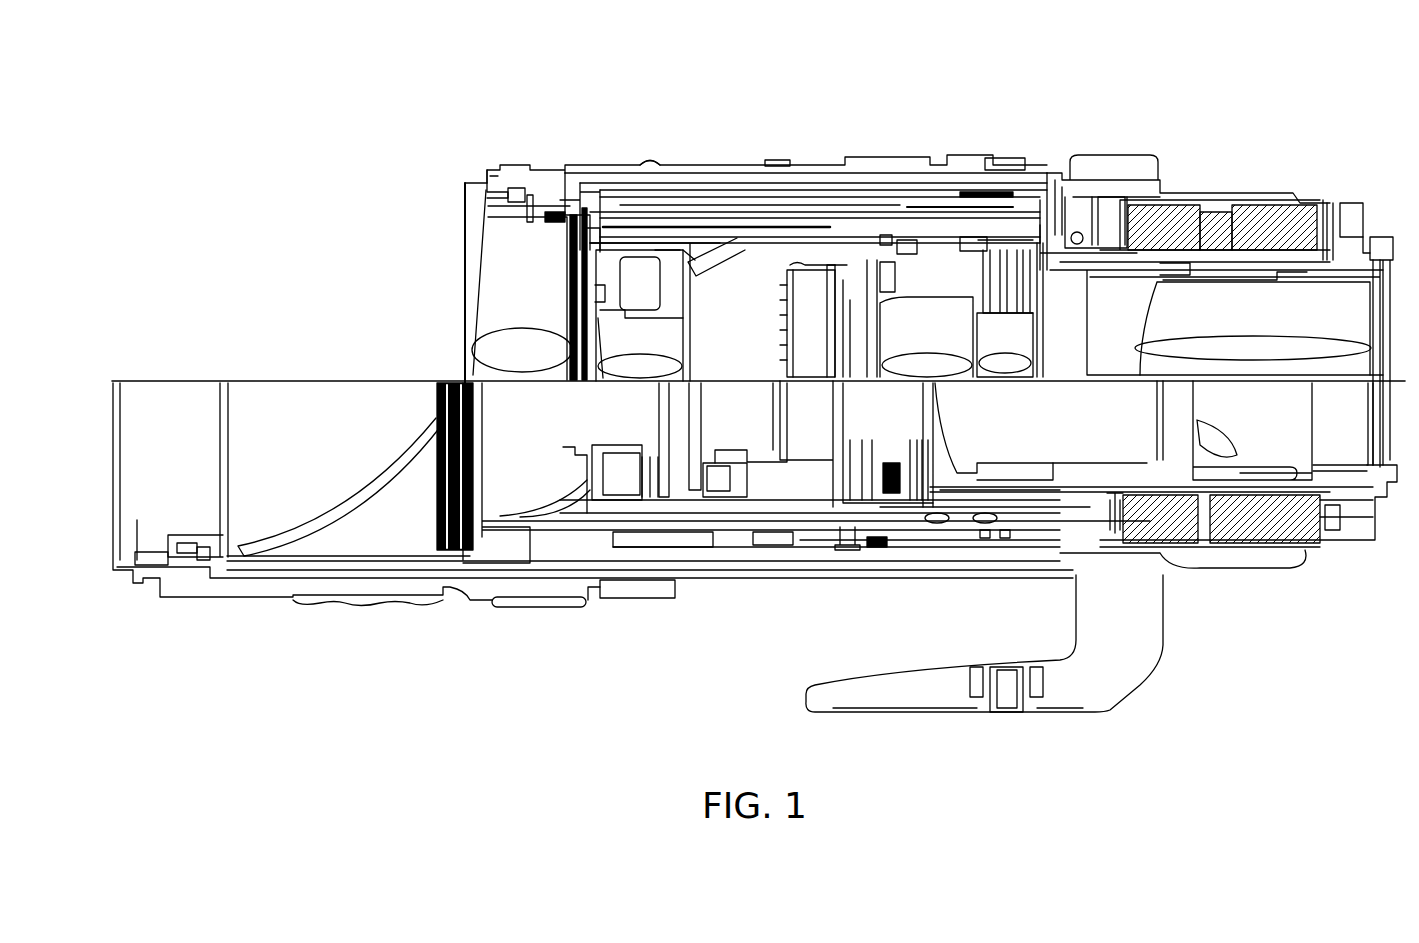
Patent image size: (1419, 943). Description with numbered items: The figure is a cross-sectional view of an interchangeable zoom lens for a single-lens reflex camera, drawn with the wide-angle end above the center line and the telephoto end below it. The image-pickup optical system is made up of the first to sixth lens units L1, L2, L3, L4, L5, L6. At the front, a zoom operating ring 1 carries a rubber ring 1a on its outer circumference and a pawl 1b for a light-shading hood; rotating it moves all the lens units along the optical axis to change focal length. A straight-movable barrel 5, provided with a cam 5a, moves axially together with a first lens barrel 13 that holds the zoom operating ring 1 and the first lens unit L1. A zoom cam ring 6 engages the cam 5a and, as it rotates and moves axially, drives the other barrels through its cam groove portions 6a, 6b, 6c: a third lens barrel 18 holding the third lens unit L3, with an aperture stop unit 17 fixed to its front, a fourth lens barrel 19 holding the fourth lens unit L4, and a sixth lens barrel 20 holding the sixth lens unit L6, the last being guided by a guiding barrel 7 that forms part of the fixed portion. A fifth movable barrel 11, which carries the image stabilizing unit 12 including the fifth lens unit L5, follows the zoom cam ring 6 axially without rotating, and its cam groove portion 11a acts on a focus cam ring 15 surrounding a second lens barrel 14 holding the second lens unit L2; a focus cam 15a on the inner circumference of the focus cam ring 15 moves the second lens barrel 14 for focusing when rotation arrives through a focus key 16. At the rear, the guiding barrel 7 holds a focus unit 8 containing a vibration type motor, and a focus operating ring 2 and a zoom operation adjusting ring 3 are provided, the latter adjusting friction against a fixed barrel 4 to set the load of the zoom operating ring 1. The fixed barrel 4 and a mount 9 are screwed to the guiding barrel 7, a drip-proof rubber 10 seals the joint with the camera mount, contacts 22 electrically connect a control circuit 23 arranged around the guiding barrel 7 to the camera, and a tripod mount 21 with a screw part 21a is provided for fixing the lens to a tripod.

The zoom operating ring 1 is at (607, 175).
The rubber ring 1a is at (656, 166).
The pawl 1b is at (486, 170).
The focus operating ring 2 is at (940, 165).
The zoom operation adjusting ring 3 is at (990, 165).
The fixed barrel 4 is at (1163, 183).
The straight-movable barrel 5 is at (563, 185).
The cam 5a is at (778, 168).
The zoom cam ring 6 is at (700, 245).
The cam groove portion 6a is at (795, 270).
The cam groove portion 6b is at (890, 235).
The cam groove portion 6c is at (1160, 268).
The guiding barrel 7 is at (822, 245).
The focus unit 8 is at (1232, 213).
The mount 9 is at (1378, 240).
The drip-proof rubber 10 is at (1350, 200).
The fifth movable barrel 11 is at (843, 245).
The cam groove portion 11a is at (733, 265).
The image stabilizing unit 12 is at (1050, 260).
The first lens barrel 13 is at (518, 195).
The second lens barrel 14 is at (632, 255).
The focus cam ring 15 is at (668, 250).
The focus cam 15a is at (690, 258).
The focus key 16 is at (933, 519).
The aperture stop unit 17 is at (872, 255).
The third lens barrel 18 is at (905, 240).
The fourth lens barrel 19 is at (962, 237).
The sixth lens barrel 20 is at (1286, 272).
The tripod mount 21 is at (1103, 662).
The screw part 21a is at (1003, 706).
The contacts 22 is at (1400, 485).
The control circuit 23 is at (927, 540).
The first lens unit L1 is at (475, 355).
The second lens unit L2 is at (685, 355).
The third lens unit L3 is at (858, 382).
The fourth lens unit L4 is at (897, 372).
The fifth lens unit L5 is at (1040, 355).
The sixth lens unit L6 is at (1140, 355).